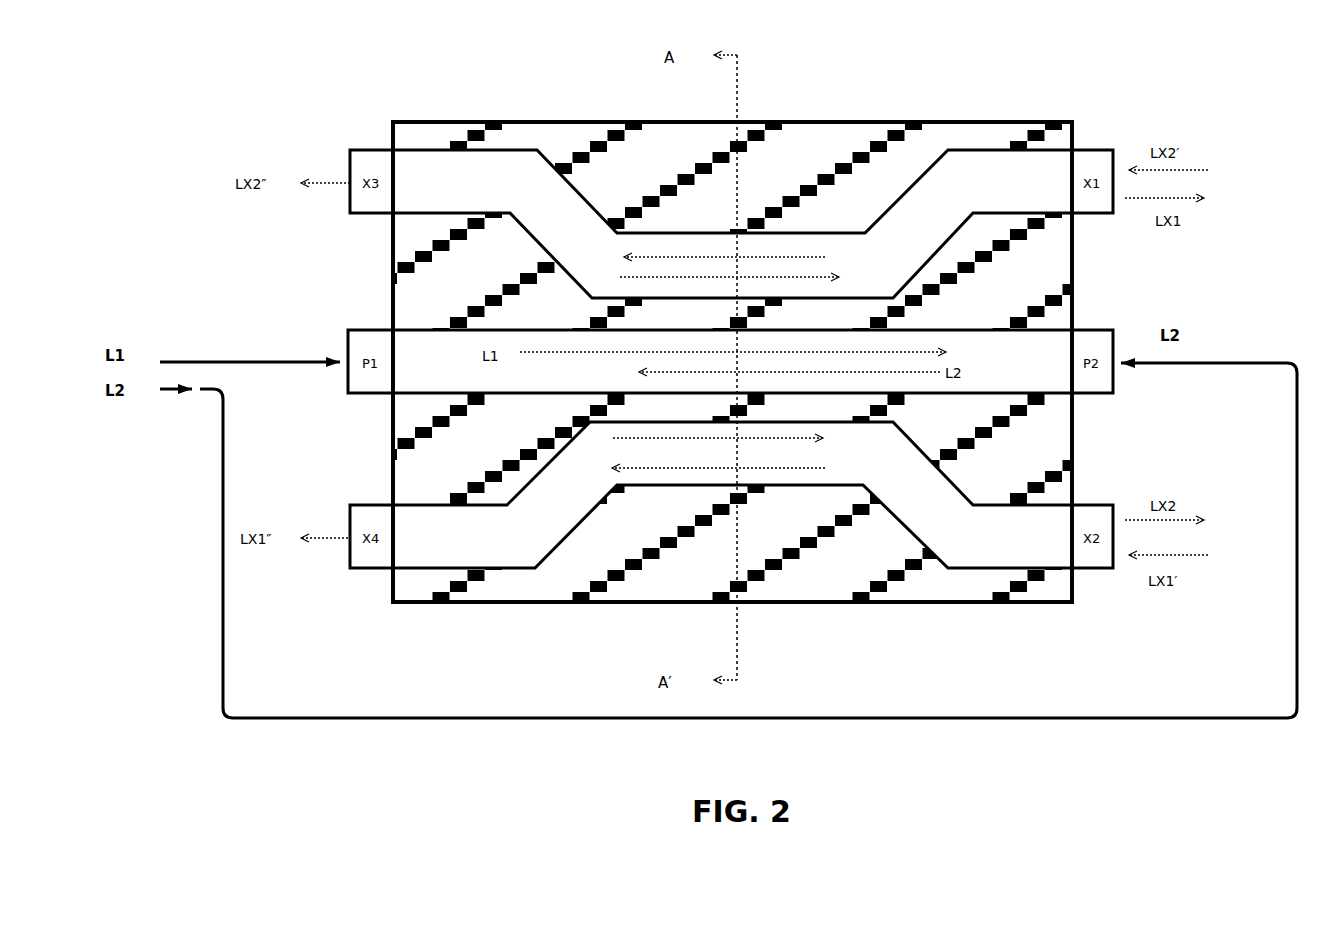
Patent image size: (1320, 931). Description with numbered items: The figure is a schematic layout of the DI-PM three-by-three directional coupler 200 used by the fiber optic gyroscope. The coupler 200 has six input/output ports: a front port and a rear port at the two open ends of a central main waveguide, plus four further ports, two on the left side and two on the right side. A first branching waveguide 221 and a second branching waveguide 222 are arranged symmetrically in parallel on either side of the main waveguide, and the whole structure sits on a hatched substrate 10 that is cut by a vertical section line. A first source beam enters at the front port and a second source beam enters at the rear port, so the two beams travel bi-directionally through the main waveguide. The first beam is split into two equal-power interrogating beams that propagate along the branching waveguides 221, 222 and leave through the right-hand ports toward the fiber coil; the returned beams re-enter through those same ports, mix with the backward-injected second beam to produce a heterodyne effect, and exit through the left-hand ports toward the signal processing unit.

The DI-PM 3×3 directional coupler 200 is at (475, 120).
The substrate (cladding) 10 is at (505, 327).
The first branching waveguide 221 is at (690, 232).
The second branching waveguide 222 is at (688, 487).